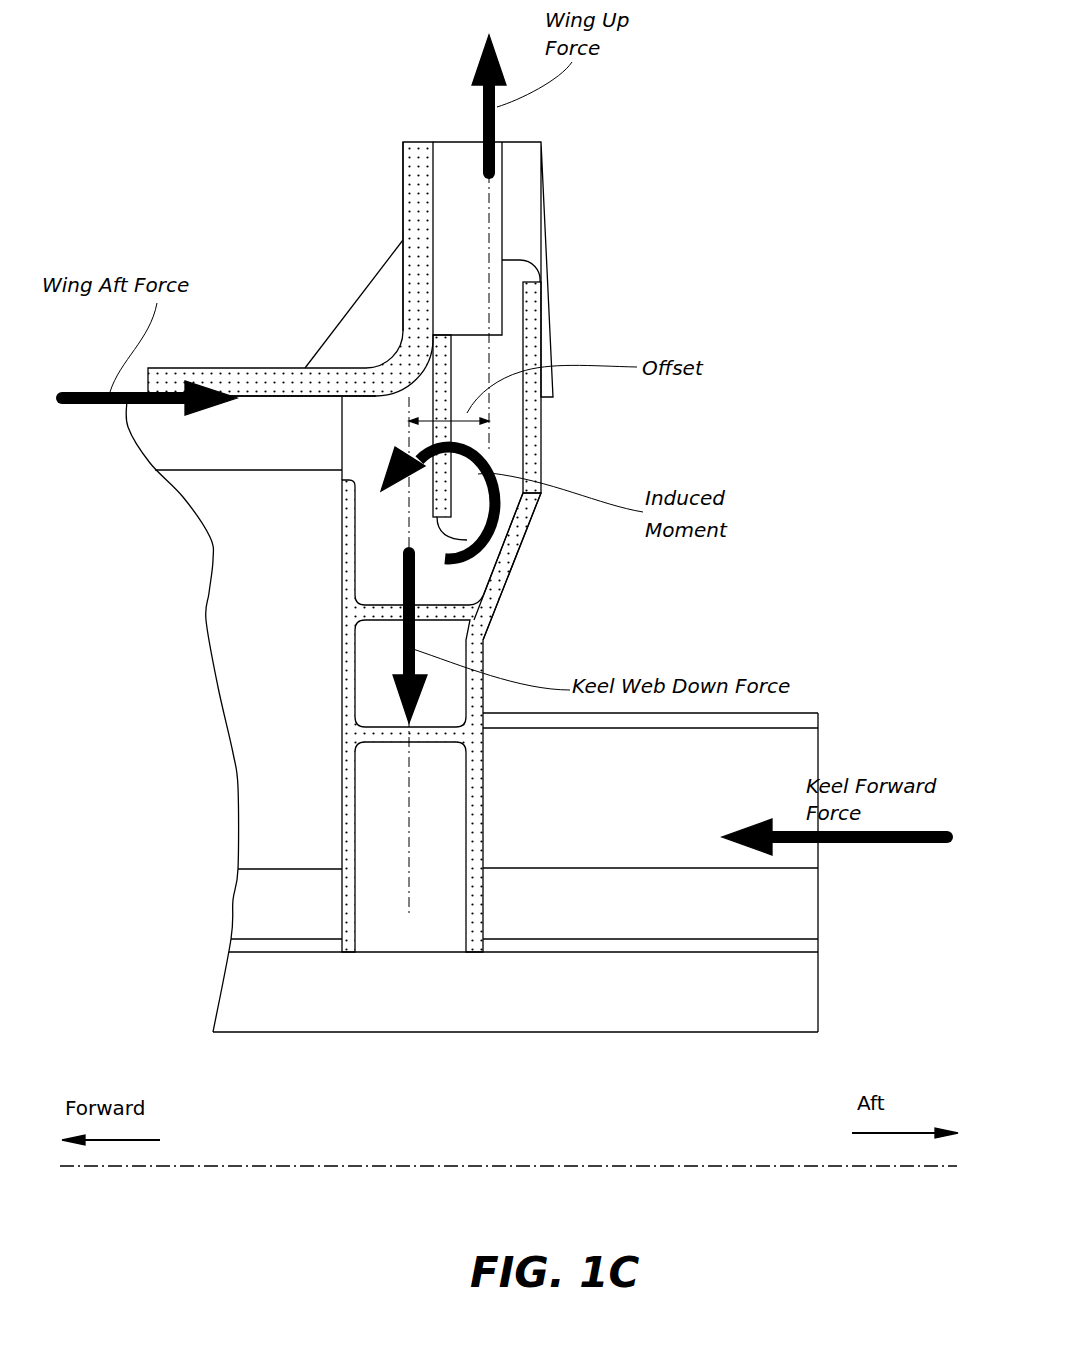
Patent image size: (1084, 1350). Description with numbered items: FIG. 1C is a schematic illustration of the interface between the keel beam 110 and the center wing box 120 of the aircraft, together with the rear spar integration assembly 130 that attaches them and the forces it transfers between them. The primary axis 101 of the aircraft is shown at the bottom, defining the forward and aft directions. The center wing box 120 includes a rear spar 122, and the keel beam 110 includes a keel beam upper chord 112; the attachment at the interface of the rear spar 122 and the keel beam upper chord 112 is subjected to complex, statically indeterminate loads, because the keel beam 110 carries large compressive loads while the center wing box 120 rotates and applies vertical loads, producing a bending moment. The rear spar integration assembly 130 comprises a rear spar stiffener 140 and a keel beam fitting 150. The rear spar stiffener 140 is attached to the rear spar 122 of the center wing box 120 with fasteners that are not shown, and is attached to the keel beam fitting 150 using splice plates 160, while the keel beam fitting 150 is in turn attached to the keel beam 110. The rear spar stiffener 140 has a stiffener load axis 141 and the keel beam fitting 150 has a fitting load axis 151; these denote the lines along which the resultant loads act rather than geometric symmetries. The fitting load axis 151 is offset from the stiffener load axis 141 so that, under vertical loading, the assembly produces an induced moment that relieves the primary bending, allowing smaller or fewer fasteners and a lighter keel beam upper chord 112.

The primary axis 101 is at (693, 1165).
The keel beam 110 is at (793, 777).
The keel beam upper chord 112 is at (243, 390).
The center wing box 120 is at (290, 230).
The rear spar 122 is at (405, 165).
The rear spar integration assembly 130 is at (559, 310).
The rear spar stiffener 140 is at (537, 225).
The stiffener load axis 141 is at (495, 243).
The keel beam fitting 150 is at (445, 585).
The fitting load axis 151 is at (410, 803).
The splice plates 160 is at (538, 413).